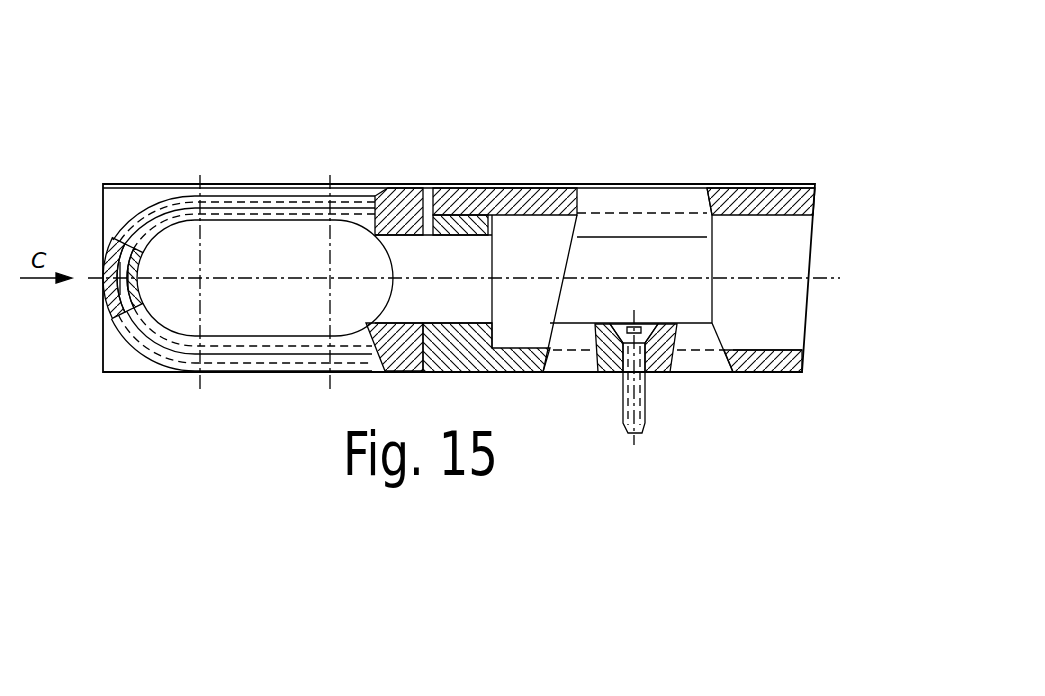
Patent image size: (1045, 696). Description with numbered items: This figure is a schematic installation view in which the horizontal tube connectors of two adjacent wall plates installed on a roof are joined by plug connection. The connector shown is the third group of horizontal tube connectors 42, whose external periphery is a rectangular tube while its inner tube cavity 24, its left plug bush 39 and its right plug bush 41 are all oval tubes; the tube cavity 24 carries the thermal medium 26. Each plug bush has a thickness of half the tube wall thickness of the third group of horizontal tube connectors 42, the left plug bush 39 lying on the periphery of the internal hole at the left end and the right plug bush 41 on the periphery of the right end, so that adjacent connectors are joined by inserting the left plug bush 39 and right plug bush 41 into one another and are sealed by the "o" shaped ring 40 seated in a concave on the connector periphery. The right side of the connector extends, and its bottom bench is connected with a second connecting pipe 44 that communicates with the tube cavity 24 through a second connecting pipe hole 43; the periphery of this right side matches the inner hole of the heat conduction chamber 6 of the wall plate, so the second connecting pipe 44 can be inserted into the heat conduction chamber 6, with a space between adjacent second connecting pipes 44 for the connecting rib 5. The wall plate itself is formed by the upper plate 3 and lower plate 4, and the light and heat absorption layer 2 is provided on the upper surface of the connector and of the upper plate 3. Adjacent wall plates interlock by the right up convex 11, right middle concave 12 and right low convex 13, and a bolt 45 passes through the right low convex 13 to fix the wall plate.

The light and heat absorption layer 2 is at (490, 195).
The upper plate 3 is at (510, 345).
The lower plate 4 is at (537, 312).
The connecting rib 5 is at (553, 260).
The heat conduction chamber 6 is at (598, 216).
The right up convex 11 is at (647, 270).
The right middle concave 12 is at (655, 323).
The right low convex 13 is at (697, 347).
The tube cavity 24 is at (210, 268).
The thermal medium 26 is at (290, 247).
The left plug bush 39 is at (114, 244).
The "o" shaped ring 40 is at (131, 243).
The right plug bush 41 is at (149, 236).
The third group of horizontal tube connectors 42 is at (403, 222).
The second connecting pipe hole 43 is at (437, 268).
The second connecting pipe 44 is at (460, 212).
The bolt 45 is at (713, 323).